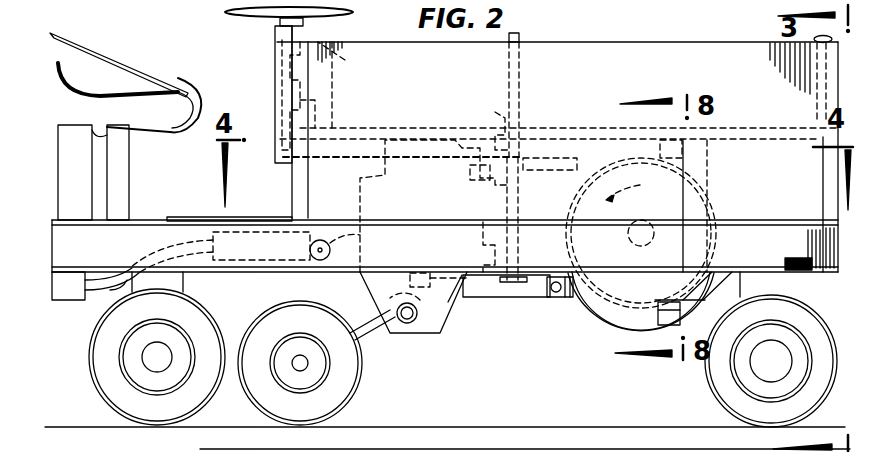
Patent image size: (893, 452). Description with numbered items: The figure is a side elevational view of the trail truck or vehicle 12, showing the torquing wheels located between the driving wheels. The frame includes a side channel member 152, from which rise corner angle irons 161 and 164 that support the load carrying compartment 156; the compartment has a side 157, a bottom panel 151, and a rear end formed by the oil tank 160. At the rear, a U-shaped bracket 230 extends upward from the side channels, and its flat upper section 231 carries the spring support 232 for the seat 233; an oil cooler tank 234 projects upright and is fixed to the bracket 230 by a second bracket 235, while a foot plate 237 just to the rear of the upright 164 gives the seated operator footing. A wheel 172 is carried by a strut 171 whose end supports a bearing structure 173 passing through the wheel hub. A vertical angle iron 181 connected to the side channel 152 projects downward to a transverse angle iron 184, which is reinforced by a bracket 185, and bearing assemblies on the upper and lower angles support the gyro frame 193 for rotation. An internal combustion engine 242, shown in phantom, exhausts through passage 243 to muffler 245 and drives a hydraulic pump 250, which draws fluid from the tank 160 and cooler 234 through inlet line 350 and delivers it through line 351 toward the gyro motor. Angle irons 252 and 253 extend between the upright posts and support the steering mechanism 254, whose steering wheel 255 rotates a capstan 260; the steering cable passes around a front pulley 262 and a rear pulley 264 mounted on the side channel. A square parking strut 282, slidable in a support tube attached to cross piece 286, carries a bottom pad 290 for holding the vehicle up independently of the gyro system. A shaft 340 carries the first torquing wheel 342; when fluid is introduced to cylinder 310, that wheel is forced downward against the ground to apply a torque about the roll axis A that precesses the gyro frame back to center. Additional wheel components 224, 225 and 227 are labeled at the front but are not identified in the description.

The vehicle body 12 is at (742, 40).
The bottom panel 151 is at (566, 133).
The side channel member 152 is at (783, 228).
The load carrying compartment 156 is at (613, 53).
The side 157 is at (668, 52).
The oil tank 160 is at (345, 52).
The corner angle iron 161 is at (826, 68).
The corner angle iron 164 is at (300, 200).
The strut 171 is at (790, 287).
The wheel 172 is at (722, 400).
The bearing structure 173 is at (776, 360).
The vertical angle iron 181 is at (698, 170).
The angle iron 184 is at (668, 325).
The bracket 185 is at (700, 300).
The gyro frame 193 is at (596, 300).
The front axle hanger 224 is at (186, 287).
The front wheel hub 225 is at (150, 363).
The front wheel tire 227 is at (205, 396).
The U-shaped bracket 230 is at (133, 203).
The flat upper section 231 is at (120, 130).
The spring support 232 is at (152, 132).
The seat 233 is at (125, 60).
The oil cooler tank 234 is at (60, 140).
The second bracket 235 is at (100, 133).
The foot plate 237 is at (248, 218).
The internal combustion engine 242 is at (433, 206).
The exhaust passage 243 is at (357, 222).
The muffler 245 is at (445, 258).
The hydraulic pump 250 is at (503, 218).
The angle iron 252 is at (282, 42).
The angle iron 253 is at (300, 10).
The steering mechanism 254 is at (280, 65).
The steering wheel 255 is at (200, 449).
The capstan 260 is at (322, 102).
The pulley 262 is at (790, 258).
The rear pulley 264 is at (245, 252).
The parking strut 282 is at (519, 34).
The cross piece 286 is at (486, 124).
The bottom pad 290 is at (515, 283).
The cylinder 310 is at (483, 300).
The shaft 340 is at (372, 332).
The first torquing wheel 342 is at (343, 378).
The fluid inlet line 350 is at (552, 168).
The line 351 is at (517, 247).